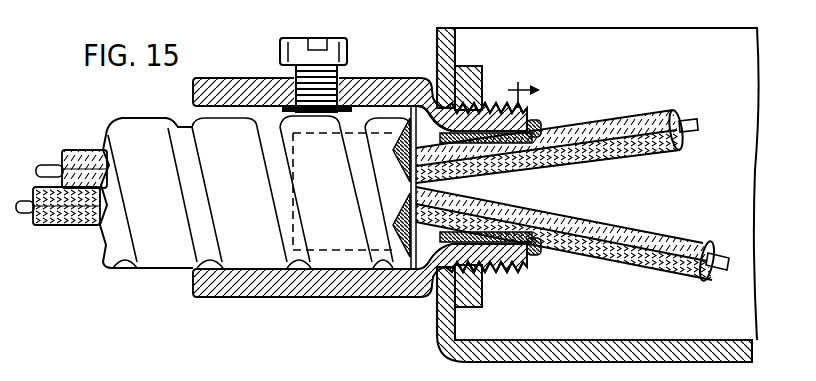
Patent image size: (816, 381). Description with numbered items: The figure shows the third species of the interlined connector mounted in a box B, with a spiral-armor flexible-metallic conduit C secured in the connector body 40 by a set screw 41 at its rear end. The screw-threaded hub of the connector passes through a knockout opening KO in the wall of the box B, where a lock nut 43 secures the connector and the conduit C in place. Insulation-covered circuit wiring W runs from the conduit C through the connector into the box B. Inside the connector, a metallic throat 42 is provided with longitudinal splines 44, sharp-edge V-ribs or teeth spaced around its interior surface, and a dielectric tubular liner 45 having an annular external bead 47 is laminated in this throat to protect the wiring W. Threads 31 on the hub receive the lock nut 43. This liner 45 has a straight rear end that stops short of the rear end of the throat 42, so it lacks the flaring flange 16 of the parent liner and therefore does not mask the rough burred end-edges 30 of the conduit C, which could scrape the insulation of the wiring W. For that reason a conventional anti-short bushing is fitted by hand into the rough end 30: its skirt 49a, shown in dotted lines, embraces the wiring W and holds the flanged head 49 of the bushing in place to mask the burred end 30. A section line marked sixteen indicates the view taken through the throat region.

The burred end-edges 30 is at (393, 158).
The threaded sleeve 31 is at (527, 113).
The connector body 40 is at (222, 282).
The set screw 41 is at (343, 50).
The metallic throat 42 is at (500, 262).
The lock nut 43 is at (470, 82).
The longitudinal splines 44 is at (481, 262).
The dielectric tubular liner 45 is at (522, 243).
The annular external bead 47 is at (535, 125).
The flanged head 49 is at (402, 198).
The skirt 49a is at (352, 212).
The knockout opening KO is at (442, 103).
The box B is at (655, 35).
The flexible-metallic conduit C is at (160, 257).
The circuit wiring W is at (24, 178).
The flange 16 is at (531, 83).